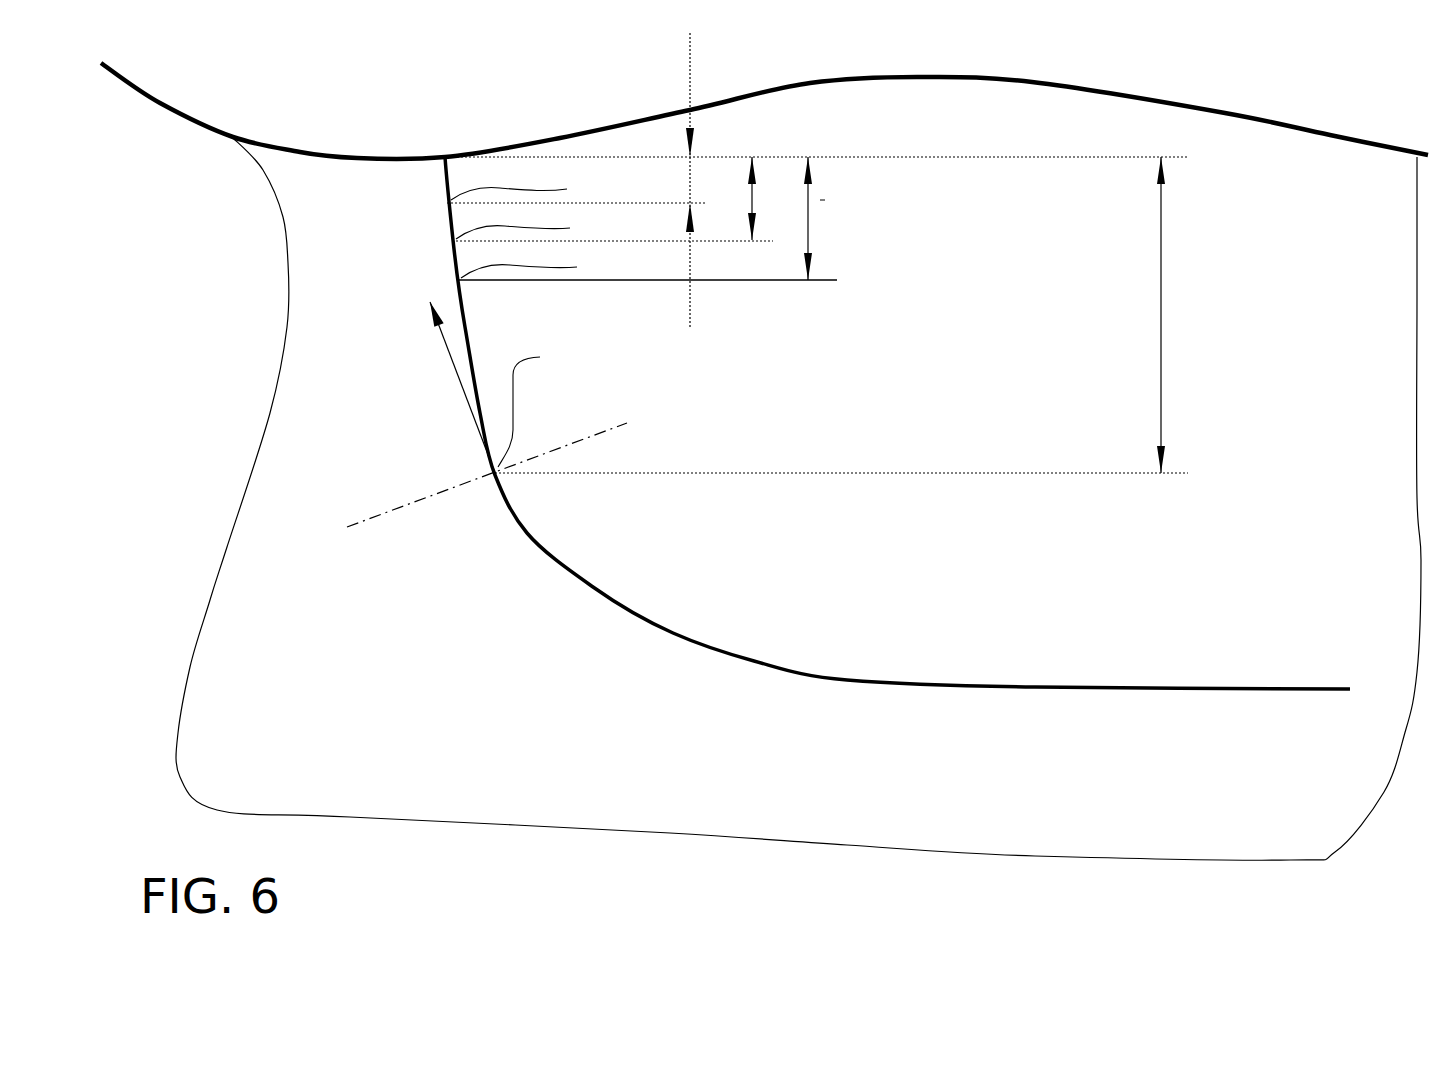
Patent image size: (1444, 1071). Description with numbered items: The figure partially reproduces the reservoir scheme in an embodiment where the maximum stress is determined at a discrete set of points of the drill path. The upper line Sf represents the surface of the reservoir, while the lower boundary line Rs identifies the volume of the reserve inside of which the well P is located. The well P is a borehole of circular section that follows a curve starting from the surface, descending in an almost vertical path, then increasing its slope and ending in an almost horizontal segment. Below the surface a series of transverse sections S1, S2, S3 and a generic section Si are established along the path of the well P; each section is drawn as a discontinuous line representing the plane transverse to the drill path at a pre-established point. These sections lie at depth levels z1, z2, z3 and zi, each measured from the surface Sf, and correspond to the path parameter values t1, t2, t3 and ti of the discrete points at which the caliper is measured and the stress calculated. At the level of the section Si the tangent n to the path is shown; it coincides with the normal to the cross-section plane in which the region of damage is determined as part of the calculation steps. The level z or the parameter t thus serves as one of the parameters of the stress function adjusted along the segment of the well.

The final surface of the part Sf is at (764, 111).
The first intermediate surface / layer boundary S1 is at (447, 203).
The second intermediate surface / layer boundary S2 is at (452, 243).
The third intermediate surface / layer boundary S3 is at (458, 282).
The i-th intermediate surface Si is at (498, 455).
The first layer thickness t1 is at (524, 184).
The second layer thickness t2 is at (533, 224).
The third layer thickness t3 is at (540, 264).
The path parameter at a discrete point ti is at (529, 401).
The depth of first layer z1 is at (727, 198).
The depth of second layer z2 is at (789, 218).
The depth of third layer z3 is at (838, 217).
The depth of i-th layer zi is at (1179, 315).
The tangent to the path n is at (457, 387).
The well P is at (897, 423).
The volume of the reserve Rs is at (798, 499).